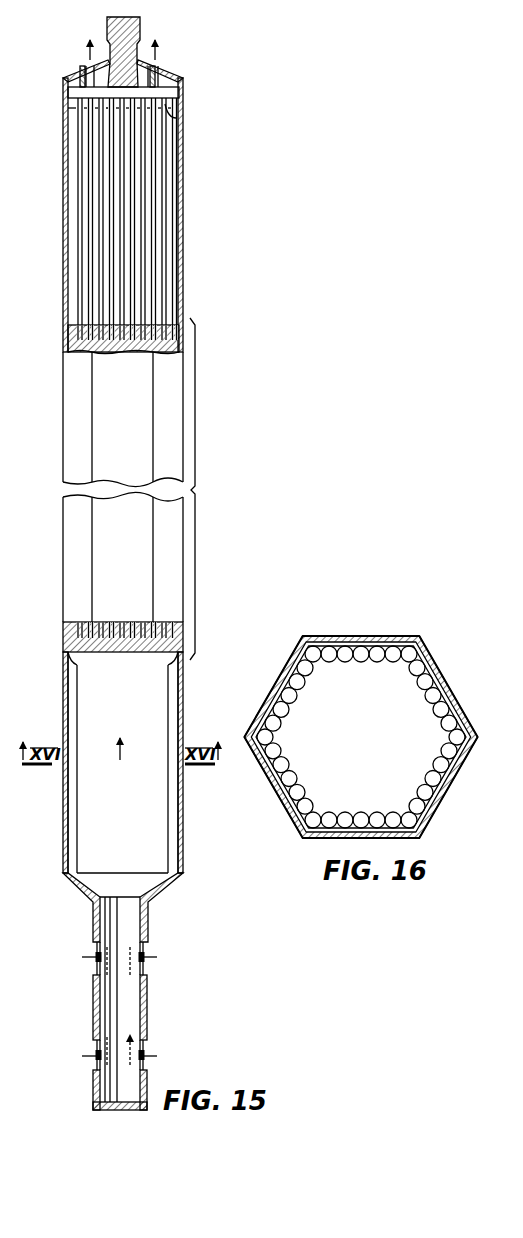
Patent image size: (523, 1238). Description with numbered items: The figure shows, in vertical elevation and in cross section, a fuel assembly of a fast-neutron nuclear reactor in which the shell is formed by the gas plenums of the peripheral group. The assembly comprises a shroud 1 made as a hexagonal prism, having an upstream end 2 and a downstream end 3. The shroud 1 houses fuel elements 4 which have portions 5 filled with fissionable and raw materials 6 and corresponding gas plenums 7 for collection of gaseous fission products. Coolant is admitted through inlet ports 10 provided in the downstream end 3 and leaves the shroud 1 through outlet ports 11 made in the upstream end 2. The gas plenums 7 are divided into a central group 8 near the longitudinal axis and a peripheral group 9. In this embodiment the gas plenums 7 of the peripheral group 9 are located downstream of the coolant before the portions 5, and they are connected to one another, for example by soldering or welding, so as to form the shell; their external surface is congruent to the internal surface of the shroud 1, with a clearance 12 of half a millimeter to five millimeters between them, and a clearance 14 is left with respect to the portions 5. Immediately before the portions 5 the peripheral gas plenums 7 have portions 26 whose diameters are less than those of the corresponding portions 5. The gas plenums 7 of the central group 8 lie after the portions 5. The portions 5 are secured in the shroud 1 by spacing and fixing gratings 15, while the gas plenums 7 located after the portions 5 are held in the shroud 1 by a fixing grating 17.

In FIG. 15, the shroud 1 is at (185, 206).
In FIG. 16, the shroud 1 is at (335, 637).
In FIG. 15, the upstream end 2 is at (128, 36).
In FIG. 15, the downstream end 3 is at (148, 1003).
In FIG. 15, the fuel elements 4 is at (63, 632).
In FIG. 15, the portions filled with fissionable and raw materials 5 is at (202, 489).
In FIG. 15, the fissionable and raw materials 6 is at (72, 353).
In FIG. 15, the gas plenums 7 is at (158, 282).
In FIG. 16, the gas plenums 7 is at (378, 652).
In FIG. 15, the central group 8 is at (82, 278).
In FIG. 15, the peripheral group 9 is at (63, 718).
In FIG. 16, the peripheral group 9 is at (295, 667).
In FIG. 15, the inlet ports 10 is at (93, 967).
In FIG. 15, the outlet ports 11 is at (165, 73).
In FIG. 15, the clearance 12 is at (63, 851).
In FIG. 16, the clearance 12 is at (283, 700).
In FIG. 15, the clearance 14 is at (72, 660).
In FIG. 15, the spacing and fixing gratings 15 is at (150, 323).
In FIG. 15, the fixing grating 17 is at (148, 117).
In FIG. 15, the reduced-diameter portions 26 is at (180, 656).